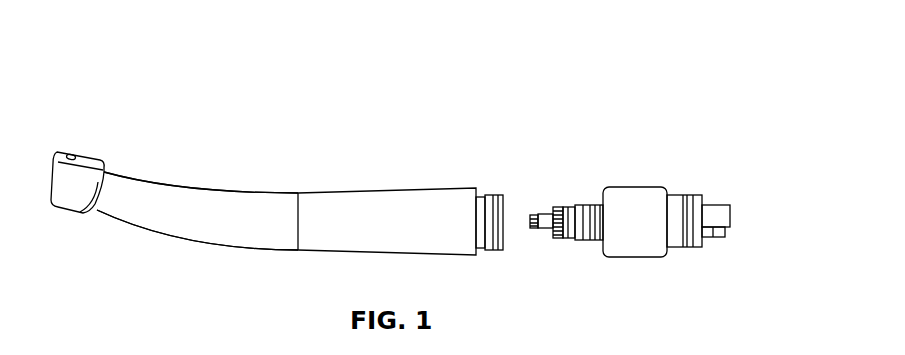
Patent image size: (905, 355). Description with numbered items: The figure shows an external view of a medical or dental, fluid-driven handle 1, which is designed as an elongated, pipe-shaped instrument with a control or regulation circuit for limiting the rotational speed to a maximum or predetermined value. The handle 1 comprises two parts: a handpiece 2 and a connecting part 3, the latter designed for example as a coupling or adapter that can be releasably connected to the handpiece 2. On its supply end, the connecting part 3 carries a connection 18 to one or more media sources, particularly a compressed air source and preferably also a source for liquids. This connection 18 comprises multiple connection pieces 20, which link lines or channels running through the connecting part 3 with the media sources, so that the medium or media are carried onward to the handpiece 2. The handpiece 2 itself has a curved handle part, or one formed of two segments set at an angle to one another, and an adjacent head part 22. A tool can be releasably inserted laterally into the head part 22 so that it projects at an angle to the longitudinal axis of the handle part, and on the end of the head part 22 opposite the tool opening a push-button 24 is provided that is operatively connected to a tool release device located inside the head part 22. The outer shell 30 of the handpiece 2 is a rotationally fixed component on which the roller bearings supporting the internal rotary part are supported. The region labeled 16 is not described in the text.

The handle 1 is at (528, 76).
The handpiece 2 is at (311, 156).
The connecting part 3 is at (641, 159).
The connection region 16 is at (516, 157).
The connection 18 is at (723, 256).
The connection pieces 20 is at (740, 212).
The head part 22 is at (70, 126).
The push-button 24 is at (92, 156).
The outer shell 30 is at (166, 233).